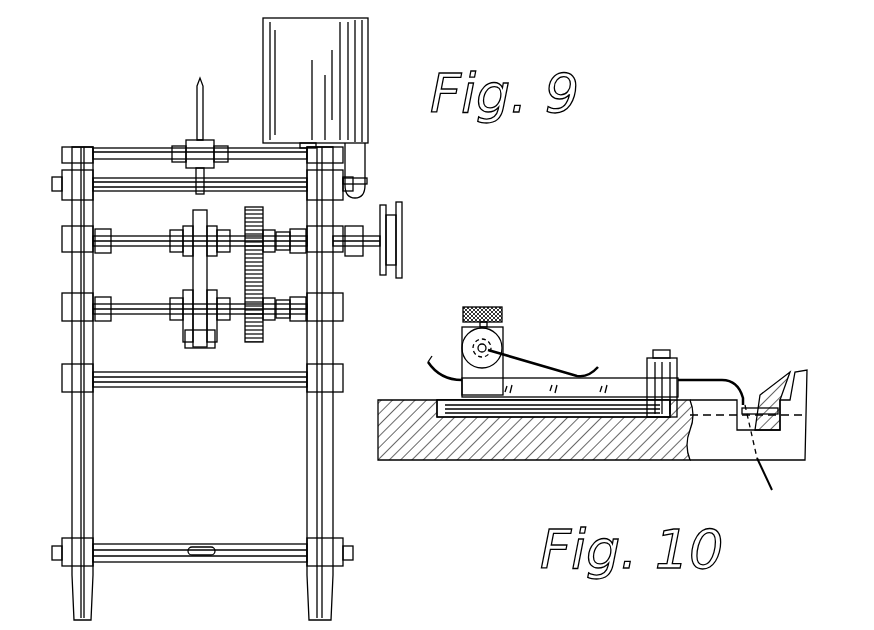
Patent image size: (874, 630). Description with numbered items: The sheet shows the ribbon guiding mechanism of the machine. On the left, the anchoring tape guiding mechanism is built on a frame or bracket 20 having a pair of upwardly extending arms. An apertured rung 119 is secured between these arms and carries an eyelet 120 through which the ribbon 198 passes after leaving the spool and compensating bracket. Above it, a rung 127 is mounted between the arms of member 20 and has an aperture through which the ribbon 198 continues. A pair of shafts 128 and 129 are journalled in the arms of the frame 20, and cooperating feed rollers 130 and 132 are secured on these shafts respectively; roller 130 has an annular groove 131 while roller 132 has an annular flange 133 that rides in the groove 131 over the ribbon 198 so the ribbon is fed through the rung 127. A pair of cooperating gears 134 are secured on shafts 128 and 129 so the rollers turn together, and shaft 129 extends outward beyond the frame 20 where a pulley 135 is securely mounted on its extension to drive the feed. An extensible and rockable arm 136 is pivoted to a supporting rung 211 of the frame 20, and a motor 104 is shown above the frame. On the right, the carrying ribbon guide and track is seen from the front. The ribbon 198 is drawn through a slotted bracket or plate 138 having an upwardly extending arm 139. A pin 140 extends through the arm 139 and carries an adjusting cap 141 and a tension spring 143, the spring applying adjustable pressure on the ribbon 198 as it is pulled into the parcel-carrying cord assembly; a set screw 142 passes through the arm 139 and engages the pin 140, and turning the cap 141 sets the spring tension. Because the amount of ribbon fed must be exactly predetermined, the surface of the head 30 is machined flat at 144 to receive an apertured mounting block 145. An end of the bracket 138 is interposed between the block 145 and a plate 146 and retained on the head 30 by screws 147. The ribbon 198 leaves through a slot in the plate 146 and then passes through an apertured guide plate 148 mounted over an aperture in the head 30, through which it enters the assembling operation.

In FIG. 9, the bracket 20 is at (72, 505).
In FIG. 9, the supporting rung 211 is at (127, 149).
In FIG. 9, the extensible and rockable arm 136 is at (203, 93).
In FIG. 9, the motor 104 is at (368, 46).
In FIG. 9, the shaft 129 is at (134, 247).
In FIG. 9, the shaft 128 is at (138, 315).
In FIG. 9, the rung 127 is at (220, 388).
In FIG. 9, the annular flange 133 is at (198, 218).
In FIG. 9, the feed roller 132 is at (186, 228).
In FIG. 9, the annular groove 131 is at (196, 352).
In FIG. 9, the feed roller 130 is at (214, 342).
In FIG. 9, the gears 134 is at (287, 180).
In FIG. 9, the pulley 135 is at (402, 218).
In FIG. 9, the apertured rung 119 is at (150, 548).
In FIG. 9, the eyelet 120 is at (202, 546).
In FIG. 10, the head 30 is at (460, 452).
In FIG. 10, the machined surface 144 is at (550, 412).
In FIG. 10, the slotted bracket 138 is at (620, 385).
In FIG. 10, the arm 139 is at (503, 330).
In FIG. 10, the set screw 142 is at (488, 306).
In FIG. 10, the pin 140 is at (490, 350).
In FIG. 10, the tension spring 143 is at (578, 372).
In FIG. 10, the adjusting cap 141 is at (458, 378).
In FIG. 10, the ribbon 198 is at (430, 364).
In FIG. 10, the mounting block 145 is at (667, 418).
In FIG. 10, the screws 147 is at (665, 350).
In FIG. 10, the plate 146 is at (680, 377).
In FIG. 10, the apertured guide plate 148 is at (752, 400).